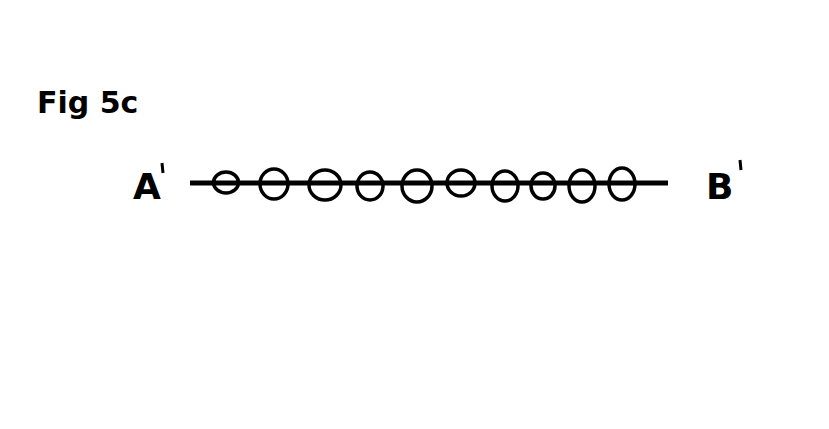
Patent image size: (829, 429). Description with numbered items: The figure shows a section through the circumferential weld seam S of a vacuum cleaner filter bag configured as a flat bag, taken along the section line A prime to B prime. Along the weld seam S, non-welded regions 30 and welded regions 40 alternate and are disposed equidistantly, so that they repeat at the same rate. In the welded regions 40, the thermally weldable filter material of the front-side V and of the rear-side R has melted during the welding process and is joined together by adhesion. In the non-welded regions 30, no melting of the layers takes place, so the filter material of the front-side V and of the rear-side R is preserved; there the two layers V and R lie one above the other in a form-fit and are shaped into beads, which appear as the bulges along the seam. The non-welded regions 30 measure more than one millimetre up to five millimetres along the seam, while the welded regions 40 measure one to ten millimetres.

The non-welded regions 30 is at (222, 200).
The welded regions 40 is at (285, 257).
The rear-side R is at (415, 204).
The front-side V is at (416, 187).
The circumferential weld seam S is at (484, 164).